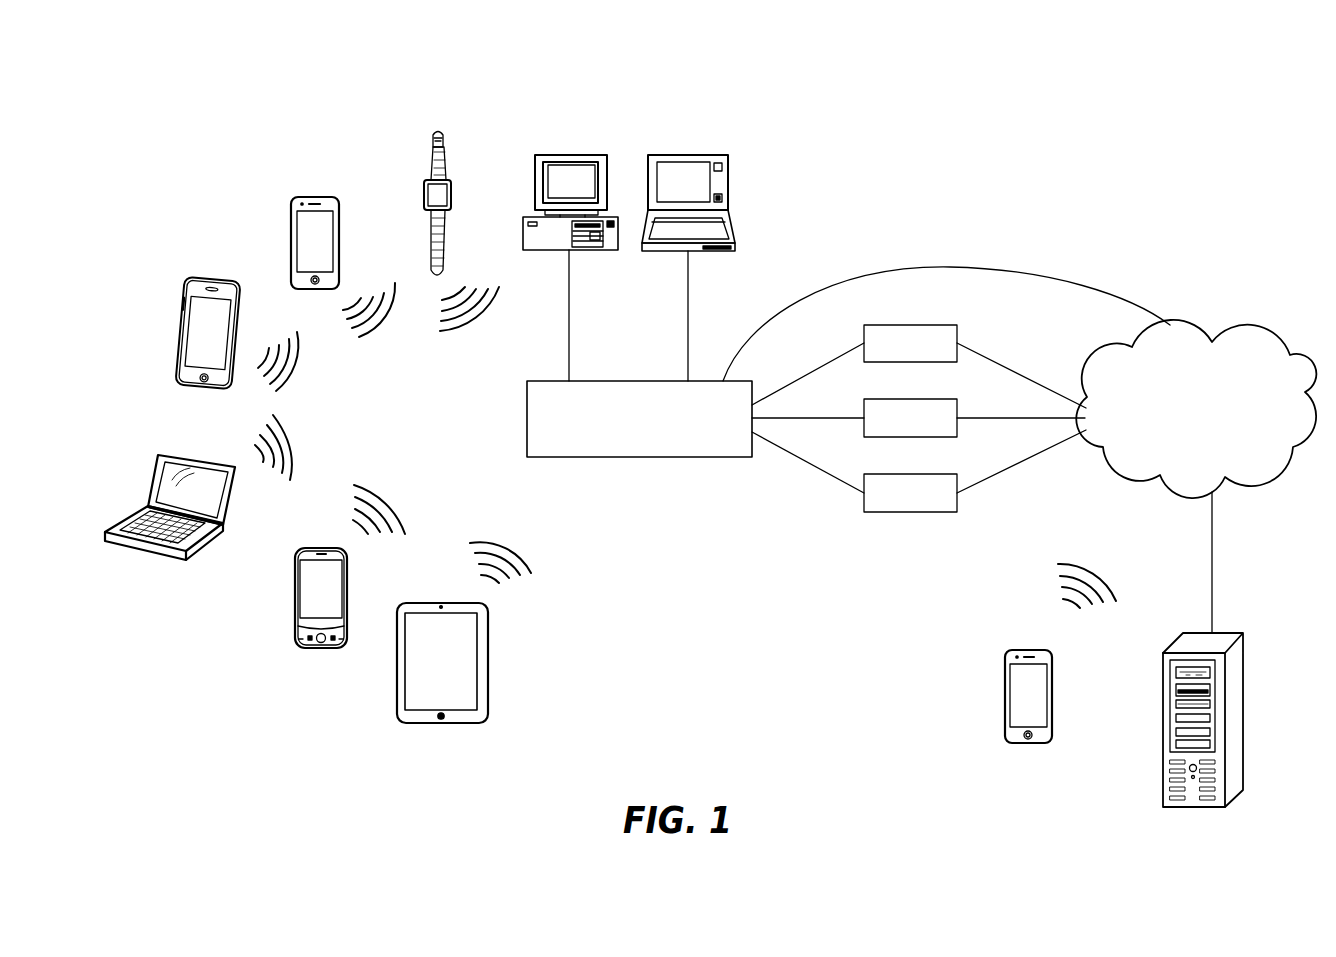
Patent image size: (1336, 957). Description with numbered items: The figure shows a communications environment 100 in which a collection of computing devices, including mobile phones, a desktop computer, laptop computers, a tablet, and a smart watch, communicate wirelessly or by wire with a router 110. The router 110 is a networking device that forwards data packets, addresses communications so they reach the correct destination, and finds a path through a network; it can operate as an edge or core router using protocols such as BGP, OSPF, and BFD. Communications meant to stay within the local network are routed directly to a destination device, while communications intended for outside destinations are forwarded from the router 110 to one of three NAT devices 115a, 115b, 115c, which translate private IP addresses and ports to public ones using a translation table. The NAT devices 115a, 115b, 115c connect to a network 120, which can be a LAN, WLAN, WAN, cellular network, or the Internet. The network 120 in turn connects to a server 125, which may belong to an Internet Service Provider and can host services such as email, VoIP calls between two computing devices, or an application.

The communications environment 100 is at (1081, 153).
The router 110 is at (632, 458).
The NAT device 115a is at (948, 322).
The NAT device 115b is at (933, 398).
The NAT device 115c is at (935, 473).
The network 120 is at (1260, 328).
The server 125 is at (1240, 631).